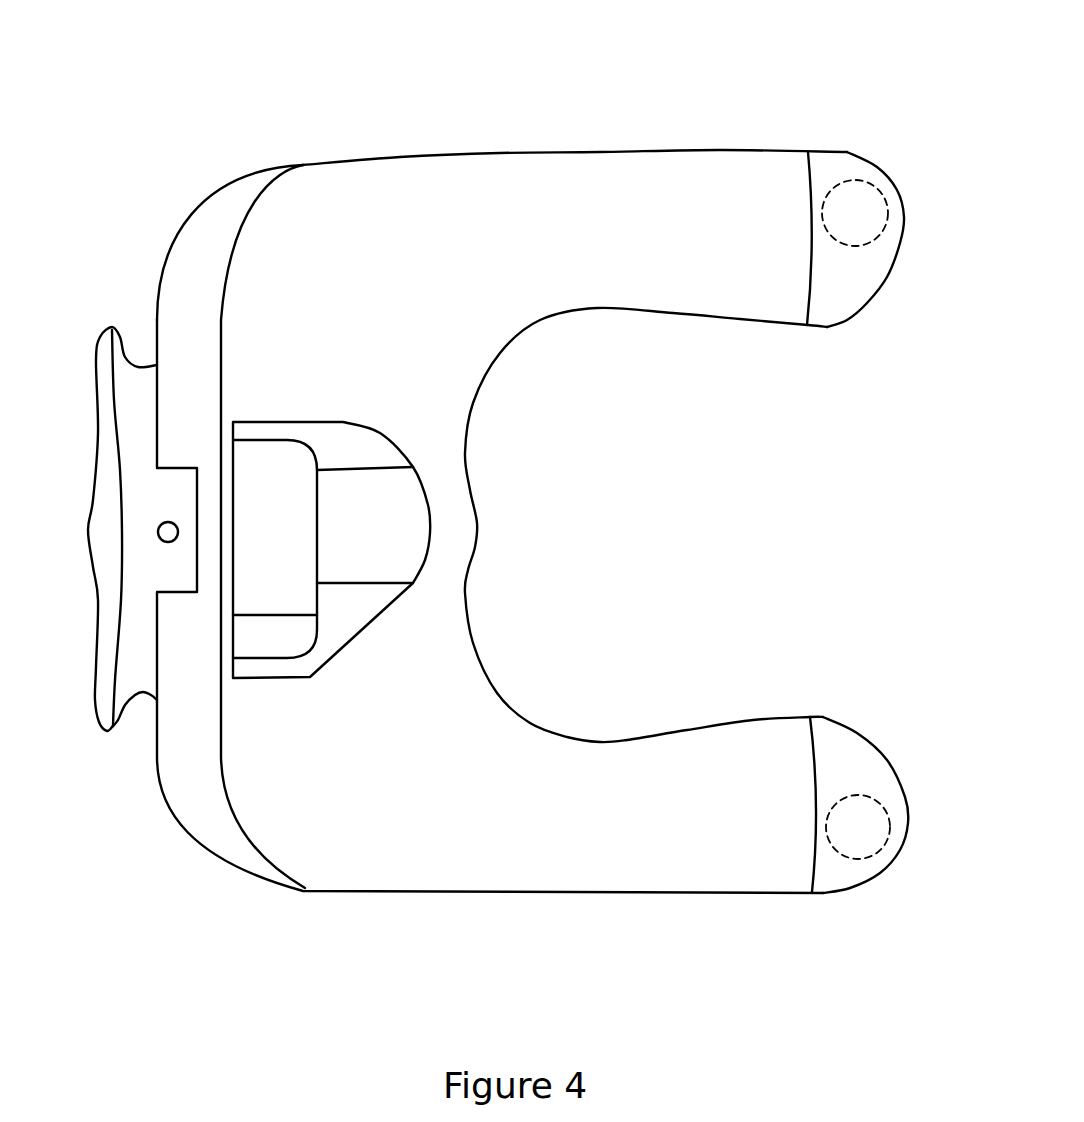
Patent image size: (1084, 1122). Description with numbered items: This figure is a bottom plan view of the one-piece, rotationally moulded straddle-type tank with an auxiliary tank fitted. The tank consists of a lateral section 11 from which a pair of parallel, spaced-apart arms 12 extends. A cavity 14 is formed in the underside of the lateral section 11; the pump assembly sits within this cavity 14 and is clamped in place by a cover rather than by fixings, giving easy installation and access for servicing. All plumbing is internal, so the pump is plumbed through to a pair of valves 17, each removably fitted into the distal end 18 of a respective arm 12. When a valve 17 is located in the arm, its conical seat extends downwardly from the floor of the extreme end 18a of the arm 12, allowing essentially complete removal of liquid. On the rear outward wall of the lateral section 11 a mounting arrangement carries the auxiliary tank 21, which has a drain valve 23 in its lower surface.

The lateral section 11 is at (432, 650).
The arms 12 is at (600, 287).
The cavity 14 is at (365, 537).
The valves 17 is at (851, 180).
The distal end 18 is at (819, 145).
The extreme end 18a is at (852, 280).
The auxiliary tank 21 is at (125, 712).
The drain valve 23 is at (168, 522).